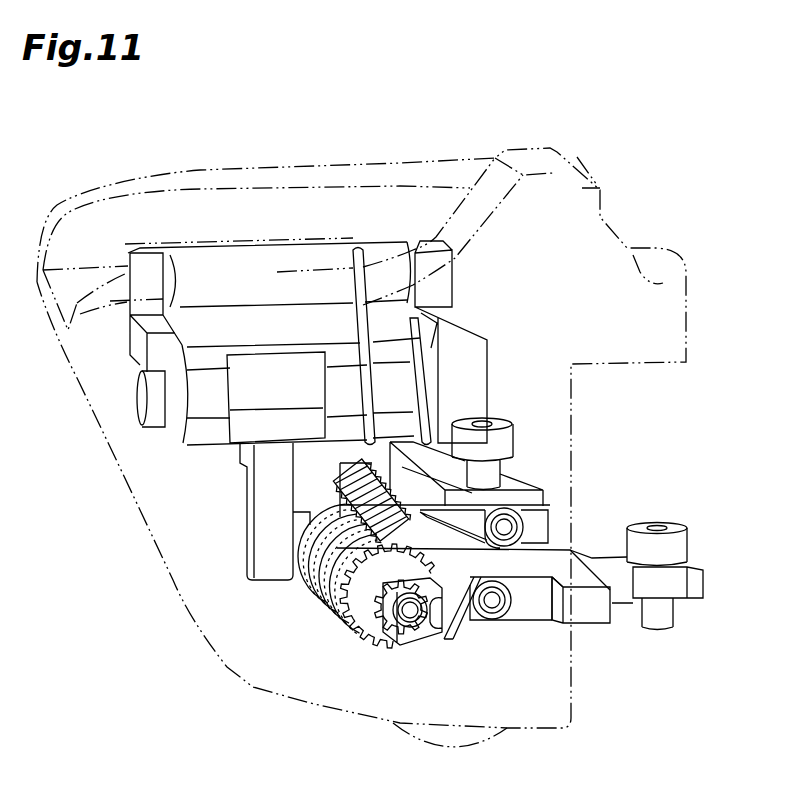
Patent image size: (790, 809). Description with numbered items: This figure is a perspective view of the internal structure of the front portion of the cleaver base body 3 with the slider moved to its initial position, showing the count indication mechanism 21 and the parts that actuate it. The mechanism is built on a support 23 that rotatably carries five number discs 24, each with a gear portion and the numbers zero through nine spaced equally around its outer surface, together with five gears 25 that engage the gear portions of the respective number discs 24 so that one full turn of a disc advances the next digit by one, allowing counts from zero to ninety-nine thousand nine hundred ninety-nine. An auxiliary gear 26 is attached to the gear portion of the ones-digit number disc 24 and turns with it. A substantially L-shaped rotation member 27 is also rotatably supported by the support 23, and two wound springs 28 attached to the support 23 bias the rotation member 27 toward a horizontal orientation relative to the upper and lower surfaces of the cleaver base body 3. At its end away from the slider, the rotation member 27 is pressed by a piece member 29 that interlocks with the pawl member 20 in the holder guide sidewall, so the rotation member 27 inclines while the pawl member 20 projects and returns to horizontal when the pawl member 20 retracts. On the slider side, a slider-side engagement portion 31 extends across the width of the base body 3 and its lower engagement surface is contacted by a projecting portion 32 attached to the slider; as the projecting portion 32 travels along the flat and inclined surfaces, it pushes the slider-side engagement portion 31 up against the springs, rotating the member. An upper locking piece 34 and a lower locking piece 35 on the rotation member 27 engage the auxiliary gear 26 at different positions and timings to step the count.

The cleaver base body 3 is at (313, 183).
The pawl member 20 is at (245, 267).
The count indication mechanism 21 is at (310, 597).
The support 23 is at (520, 477).
The number disc 24 is at (337, 613).
The gear 25 is at (340, 471).
The auxiliary gear 26 is at (373, 617).
The rotation member 27 is at (507, 565).
The wound spring 28 is at (515, 512).
The piece member 29 is at (273, 522).
The slider-side engagement portion 31 is at (590, 557).
The projecting portion 32 is at (687, 578).
The upper locking piece 34 is at (448, 640).
The lower locking piece 35 is at (403, 647).